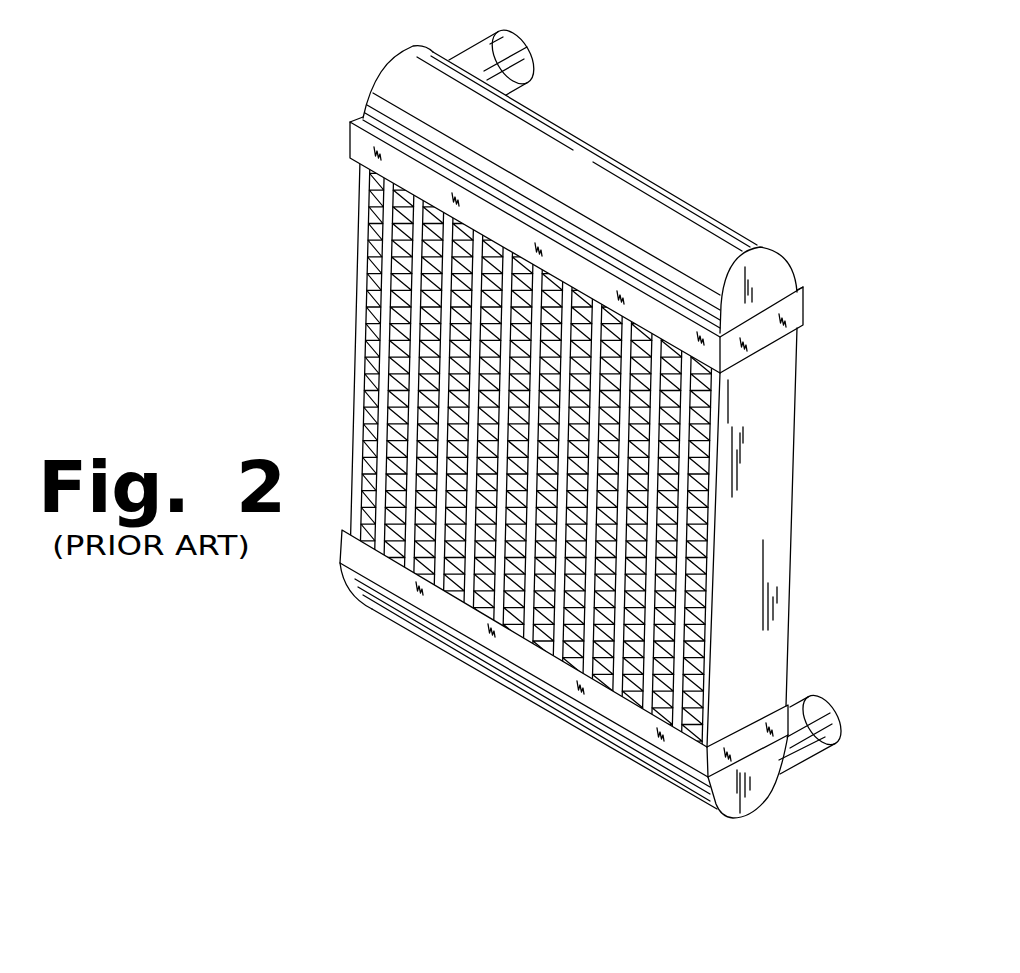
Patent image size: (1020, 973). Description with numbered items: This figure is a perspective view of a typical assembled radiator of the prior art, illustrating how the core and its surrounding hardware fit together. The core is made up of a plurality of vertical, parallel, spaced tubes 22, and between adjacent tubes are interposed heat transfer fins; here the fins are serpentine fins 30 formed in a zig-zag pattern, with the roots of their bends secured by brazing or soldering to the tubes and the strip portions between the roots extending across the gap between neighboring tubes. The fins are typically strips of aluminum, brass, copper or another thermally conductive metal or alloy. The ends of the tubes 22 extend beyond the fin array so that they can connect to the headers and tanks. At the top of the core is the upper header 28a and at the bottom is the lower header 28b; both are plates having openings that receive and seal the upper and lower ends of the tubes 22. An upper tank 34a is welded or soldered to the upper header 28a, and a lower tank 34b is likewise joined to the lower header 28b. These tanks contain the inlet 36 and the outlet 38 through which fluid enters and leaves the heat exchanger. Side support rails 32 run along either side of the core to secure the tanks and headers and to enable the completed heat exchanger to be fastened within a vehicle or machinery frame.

The tubes 22 is at (413, 358).
The serpentine fins 30 is at (428, 468).
The upper header 28a is at (797, 313).
The lower header 28b is at (358, 560).
The side support rails 32 is at (763, 417).
The upper tank 34a is at (580, 158).
The lower tank 34b is at (615, 757).
The inlet 36 is at (533, 40).
The outlet 38 is at (820, 702).